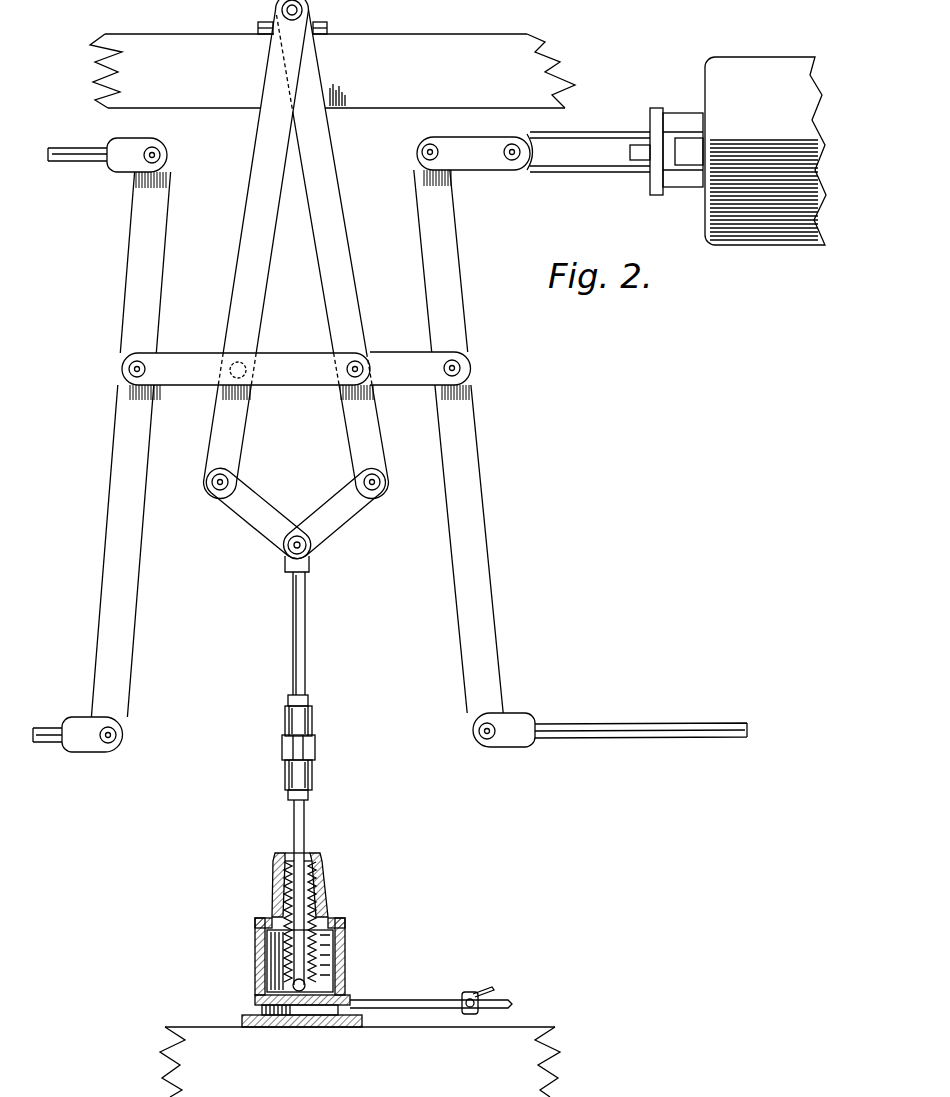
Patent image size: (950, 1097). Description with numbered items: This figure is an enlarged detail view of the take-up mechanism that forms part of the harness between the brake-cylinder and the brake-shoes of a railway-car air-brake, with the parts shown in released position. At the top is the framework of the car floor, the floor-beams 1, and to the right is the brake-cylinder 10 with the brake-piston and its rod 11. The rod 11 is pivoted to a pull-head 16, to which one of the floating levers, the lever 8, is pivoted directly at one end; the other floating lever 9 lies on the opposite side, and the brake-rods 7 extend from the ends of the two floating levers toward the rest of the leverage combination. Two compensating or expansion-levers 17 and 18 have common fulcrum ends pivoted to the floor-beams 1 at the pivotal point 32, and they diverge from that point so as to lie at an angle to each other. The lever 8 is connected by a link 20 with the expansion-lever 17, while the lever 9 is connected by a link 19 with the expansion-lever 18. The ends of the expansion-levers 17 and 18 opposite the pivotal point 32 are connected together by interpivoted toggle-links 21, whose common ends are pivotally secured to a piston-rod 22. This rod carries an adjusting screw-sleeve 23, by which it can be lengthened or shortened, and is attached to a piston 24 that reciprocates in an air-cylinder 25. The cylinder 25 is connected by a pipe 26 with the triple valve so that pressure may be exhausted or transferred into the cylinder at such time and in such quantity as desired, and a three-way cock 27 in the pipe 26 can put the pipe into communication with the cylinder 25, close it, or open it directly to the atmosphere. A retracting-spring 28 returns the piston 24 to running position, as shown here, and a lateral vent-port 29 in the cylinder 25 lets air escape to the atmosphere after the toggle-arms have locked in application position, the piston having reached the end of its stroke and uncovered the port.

The floor-beams 1 is at (332, 71).
The brake-rods 7 is at (43, 727).
The floating lever 8 is at (486, 540).
The floating lever 9 is at (107, 517).
The brake-cylinder 10 is at (705, 88).
The brake-piston rod 11 is at (564, 170).
The pull-head 16 is at (478, 166).
The expansion-lever 17 is at (243, 220).
The expansion-lever 18 is at (347, 250).
The link 19 is at (279, 388).
The link 20 is at (386, 354).
The toggle-links 21 is at (249, 527).
The piston-rod 22 is at (306, 626).
The adjusting screw-sleeve 23 is at (316, 745).
The piston 24 is at (260, 1000).
The air-cylinder 25 is at (255, 947).
The pipe 26 is at (431, 990).
The three-way cock 27 is at (474, 992).
The retracting-spring 28 is at (272, 871).
The vent-port 29 is at (345, 937).
The pivotal point 32 is at (274, 41).